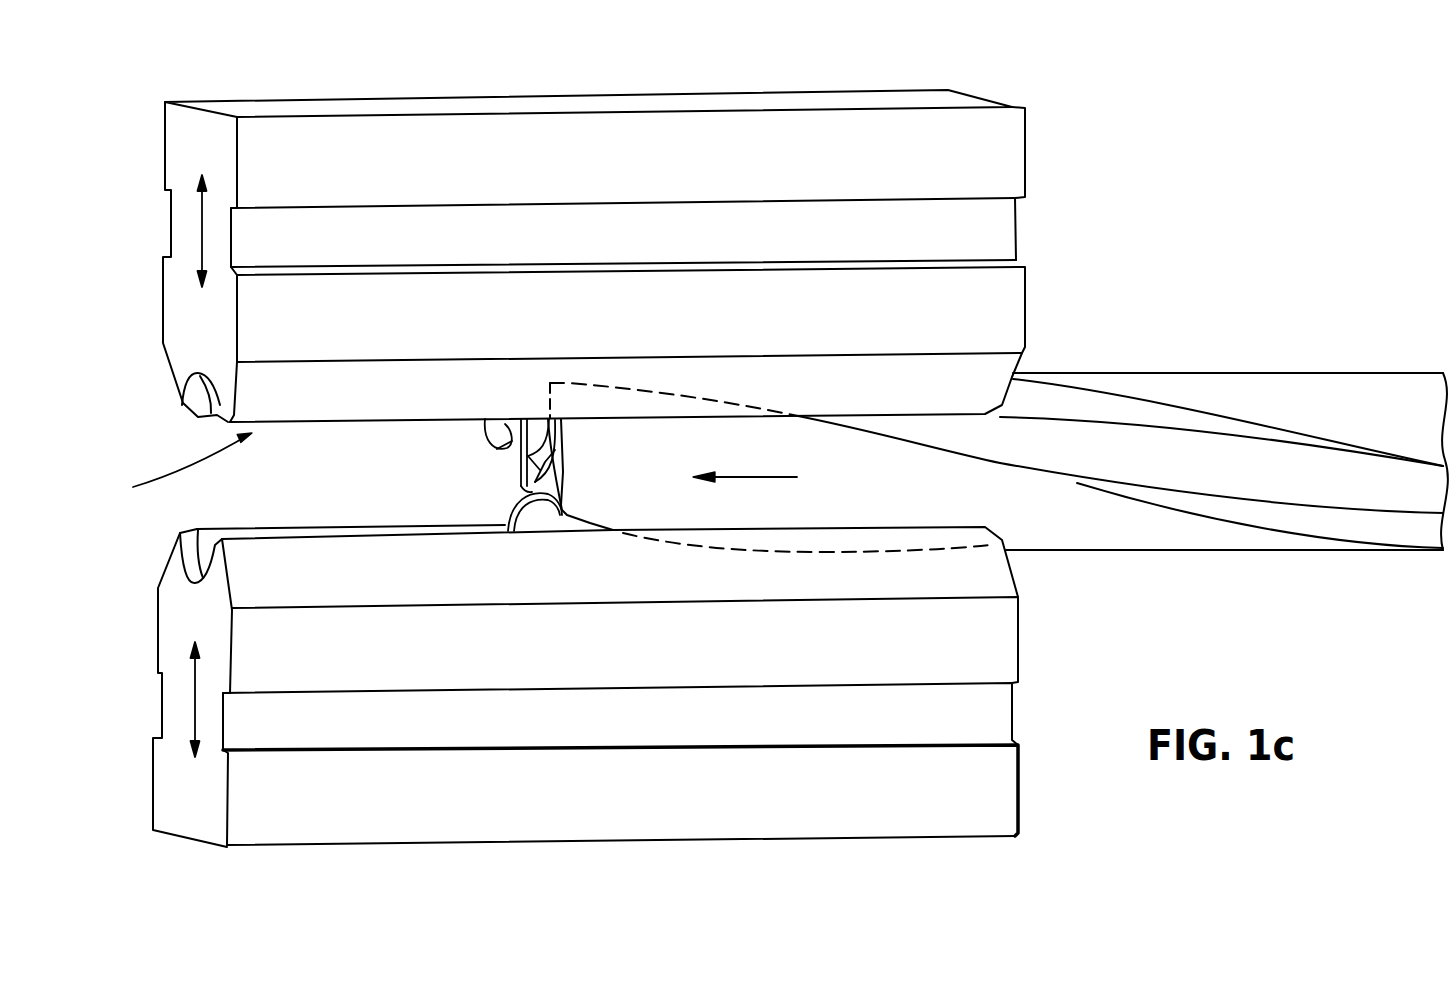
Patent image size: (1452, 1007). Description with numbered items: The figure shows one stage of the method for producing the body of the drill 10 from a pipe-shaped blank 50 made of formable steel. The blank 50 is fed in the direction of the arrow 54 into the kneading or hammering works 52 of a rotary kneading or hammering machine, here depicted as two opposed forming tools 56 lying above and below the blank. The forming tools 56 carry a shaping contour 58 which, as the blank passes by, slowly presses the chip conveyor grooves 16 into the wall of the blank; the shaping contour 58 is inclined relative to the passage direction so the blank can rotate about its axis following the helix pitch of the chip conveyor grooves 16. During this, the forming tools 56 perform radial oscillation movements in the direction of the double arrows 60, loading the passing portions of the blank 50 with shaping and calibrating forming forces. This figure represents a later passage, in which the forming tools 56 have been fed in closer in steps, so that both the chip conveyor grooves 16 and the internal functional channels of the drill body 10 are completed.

The body of the drill 10 is at (580, 458).
The chip conveyor grooves 16 is at (1113, 458).
The pipe-shaped blank 50 is at (1269, 395).
The kneading or hammering works 52 is at (177, 464).
The arrow indicating feed direction 54 is at (758, 478).
The forming tools 56 is at (398, 580).
The shaping contour 58 is at (515, 490).
The double arrows 60 is at (205, 220).